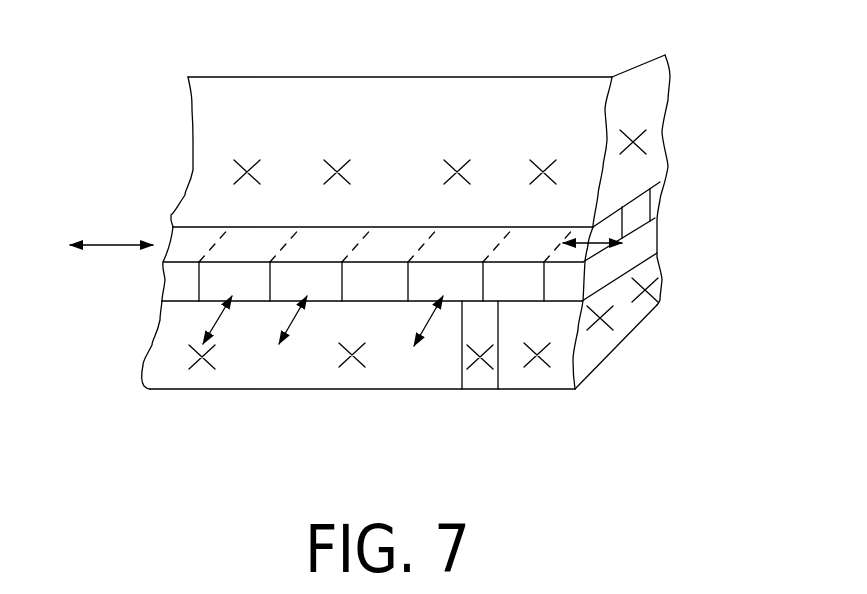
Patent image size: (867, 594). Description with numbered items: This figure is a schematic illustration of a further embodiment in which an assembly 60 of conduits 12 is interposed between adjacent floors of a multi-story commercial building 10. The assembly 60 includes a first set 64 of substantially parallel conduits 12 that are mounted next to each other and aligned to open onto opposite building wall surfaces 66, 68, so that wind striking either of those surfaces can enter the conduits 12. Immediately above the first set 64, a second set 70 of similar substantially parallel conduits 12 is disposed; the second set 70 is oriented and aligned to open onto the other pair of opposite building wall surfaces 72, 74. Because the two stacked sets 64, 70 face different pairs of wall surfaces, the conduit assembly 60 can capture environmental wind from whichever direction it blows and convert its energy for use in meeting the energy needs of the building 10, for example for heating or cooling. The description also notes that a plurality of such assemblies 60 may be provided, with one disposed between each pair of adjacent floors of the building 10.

The multi-story commercial building 10 is at (172, 148).
The conduits 12 is at (457, 301).
The assembly of conduits 60 is at (148, 287).
The first set of conduits 64 is at (562, 303).
The building wall surface 66 is at (265, 363).
The building wall surface 68 is at (670, 90).
The second set of conduits 70 is at (192, 250).
The building wall surface 72 is at (645, 80).
The building wall surface 74 is at (183, 97).